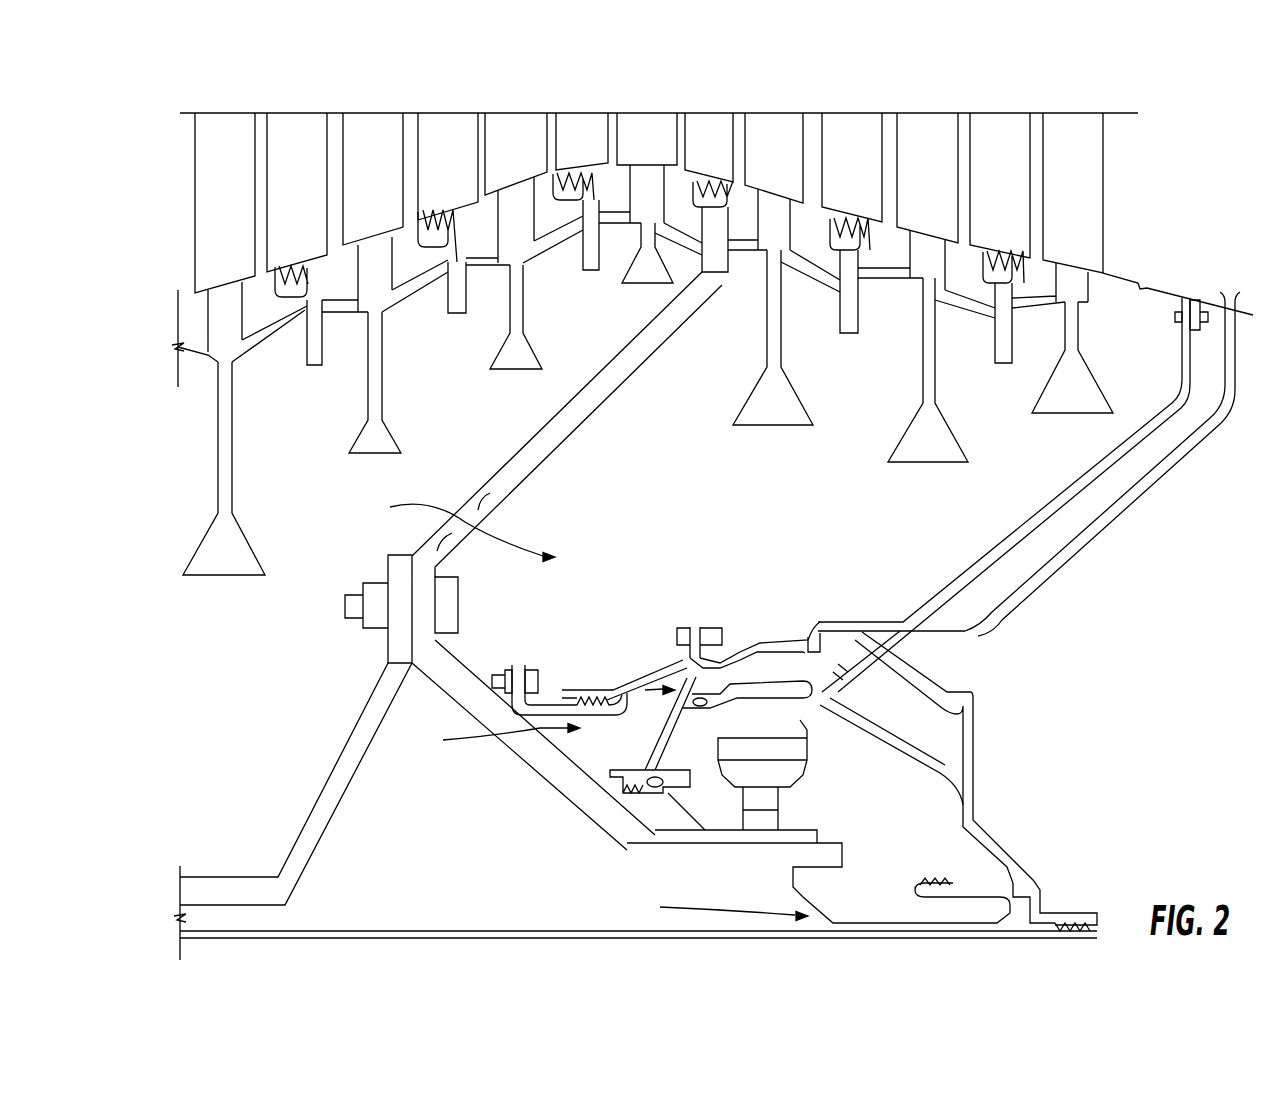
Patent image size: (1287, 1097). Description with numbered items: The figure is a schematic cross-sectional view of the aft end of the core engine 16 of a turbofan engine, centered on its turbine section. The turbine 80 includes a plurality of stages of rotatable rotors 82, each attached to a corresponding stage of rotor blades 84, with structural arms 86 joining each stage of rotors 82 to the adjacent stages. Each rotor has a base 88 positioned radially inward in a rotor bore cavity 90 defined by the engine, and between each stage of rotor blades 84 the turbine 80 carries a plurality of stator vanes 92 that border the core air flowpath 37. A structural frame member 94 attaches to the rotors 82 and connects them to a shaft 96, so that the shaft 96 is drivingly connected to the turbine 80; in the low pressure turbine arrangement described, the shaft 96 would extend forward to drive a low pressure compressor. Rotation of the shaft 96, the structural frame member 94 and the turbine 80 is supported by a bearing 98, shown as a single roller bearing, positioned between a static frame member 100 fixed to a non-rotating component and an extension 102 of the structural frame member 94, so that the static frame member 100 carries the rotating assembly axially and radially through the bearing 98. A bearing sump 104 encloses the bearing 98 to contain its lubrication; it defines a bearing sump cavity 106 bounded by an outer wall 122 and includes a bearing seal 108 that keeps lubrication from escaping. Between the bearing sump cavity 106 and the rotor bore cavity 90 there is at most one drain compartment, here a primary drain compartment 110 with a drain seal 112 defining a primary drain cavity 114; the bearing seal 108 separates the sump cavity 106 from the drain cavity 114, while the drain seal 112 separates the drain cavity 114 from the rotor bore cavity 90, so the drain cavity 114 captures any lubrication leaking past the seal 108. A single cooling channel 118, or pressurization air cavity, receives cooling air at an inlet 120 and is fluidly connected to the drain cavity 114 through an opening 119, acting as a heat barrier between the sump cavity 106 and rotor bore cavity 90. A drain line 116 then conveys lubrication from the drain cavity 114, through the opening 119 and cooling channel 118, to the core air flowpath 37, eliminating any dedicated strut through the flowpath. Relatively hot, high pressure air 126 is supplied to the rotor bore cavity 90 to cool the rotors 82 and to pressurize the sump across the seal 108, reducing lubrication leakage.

The core engine 16 is at (160, 122).
The core air flowpath 37 is at (333, 125).
The turbine 80 is at (900, 105).
The rotors 82 is at (840, 372).
The rotor blades 84 is at (775, 143).
The structural arms 86 is at (820, 275).
The base 88 is at (752, 395).
The rotor bore cavity 90 is at (752, 507).
The stator vanes 92 is at (578, 128).
The structural frame member 94 is at (570, 471).
The shaft 96 is at (232, 890).
The bearing 98 is at (818, 811).
The static frame member 100 is at (967, 575).
The extension 102 is at (548, 773).
The bearing sump 104 is at (900, 783).
The bearing sump cavity 106 is at (917, 813).
The bearing seal 108 is at (633, 810).
The primary drain compartment 110 is at (620, 710).
The drain seal 112 is at (578, 675).
The primary drain cavity 114 is at (613, 749).
The drain line 116 is at (1067, 553).
The cooling channel 118 is at (903, 717).
The opening 119 is at (613, 700).
The inlet 120 is at (727, 897).
The outer wall 122 is at (670, 740).
The air 126 is at (497, 533).